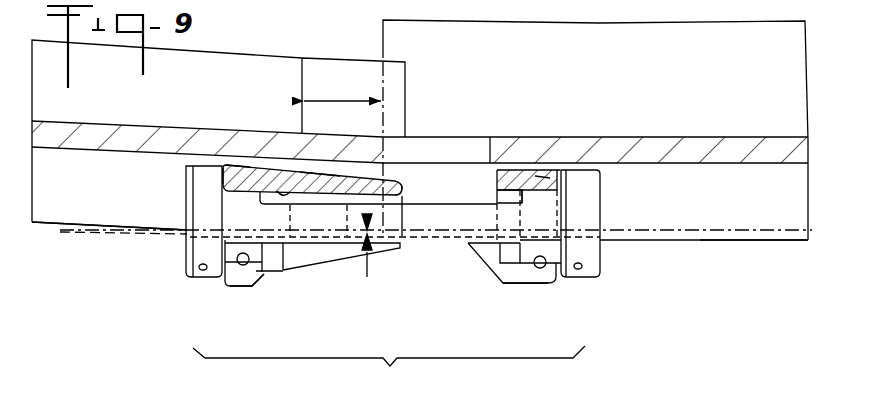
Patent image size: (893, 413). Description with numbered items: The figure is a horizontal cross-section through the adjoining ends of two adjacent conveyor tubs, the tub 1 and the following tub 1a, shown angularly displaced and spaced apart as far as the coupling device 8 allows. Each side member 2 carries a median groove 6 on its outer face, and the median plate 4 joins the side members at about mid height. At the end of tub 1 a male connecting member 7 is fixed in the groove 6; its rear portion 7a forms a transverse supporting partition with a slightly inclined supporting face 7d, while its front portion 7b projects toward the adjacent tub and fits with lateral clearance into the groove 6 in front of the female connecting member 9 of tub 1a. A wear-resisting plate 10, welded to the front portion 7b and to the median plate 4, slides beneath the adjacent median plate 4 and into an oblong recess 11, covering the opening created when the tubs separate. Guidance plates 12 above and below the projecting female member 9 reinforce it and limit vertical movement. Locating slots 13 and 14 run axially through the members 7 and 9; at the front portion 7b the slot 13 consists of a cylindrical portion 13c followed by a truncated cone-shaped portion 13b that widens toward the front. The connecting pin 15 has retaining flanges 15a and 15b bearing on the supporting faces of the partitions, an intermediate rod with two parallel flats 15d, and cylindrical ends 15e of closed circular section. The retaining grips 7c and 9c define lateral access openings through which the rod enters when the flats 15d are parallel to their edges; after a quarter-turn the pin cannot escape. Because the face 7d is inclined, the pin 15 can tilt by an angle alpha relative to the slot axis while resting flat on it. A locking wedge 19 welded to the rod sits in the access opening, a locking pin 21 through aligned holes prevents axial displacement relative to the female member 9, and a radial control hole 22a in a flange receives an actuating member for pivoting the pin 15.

The tub 1 is at (92, 238).
The adjacent tub 1a is at (757, 243).
The side member 2 is at (103, 141).
The median plate 4 is at (60, 117).
The median groove 6 is at (61, 214).
The male connecting member 7 is at (220, 282).
The rear portion 7a is at (237, 165).
The front portion 7b is at (352, 169).
The retaining grip 7c is at (255, 286).
The supporting face 7d is at (222, 164).
The coupling device 8 is at (389, 371).
The female connecting member 9 is at (548, 158).
The retaining grip 9c is at (547, 287).
The wear-resisting plate 10 is at (336, 65).
The oblong recess 11 is at (442, 145).
The guidance plate 12 is at (480, 262).
The locating slot 13 is at (283, 191).
The truncated cone-shaped portion 13b is at (405, 193).
The cylindrical portion 13c is at (332, 198).
The locating slot 14 is at (513, 188).
The connecting pin 15 is at (440, 231).
The retaining flange 15a is at (187, 251).
The retaining flange 15b is at (600, 185).
The flat 15d is at (322, 247).
The cylindrical end 15e is at (541, 184).
The locking wedge 19 is at (240, 268).
The locking pin 21 is at (537, 276).
The radial control hole 22a is at (580, 271).